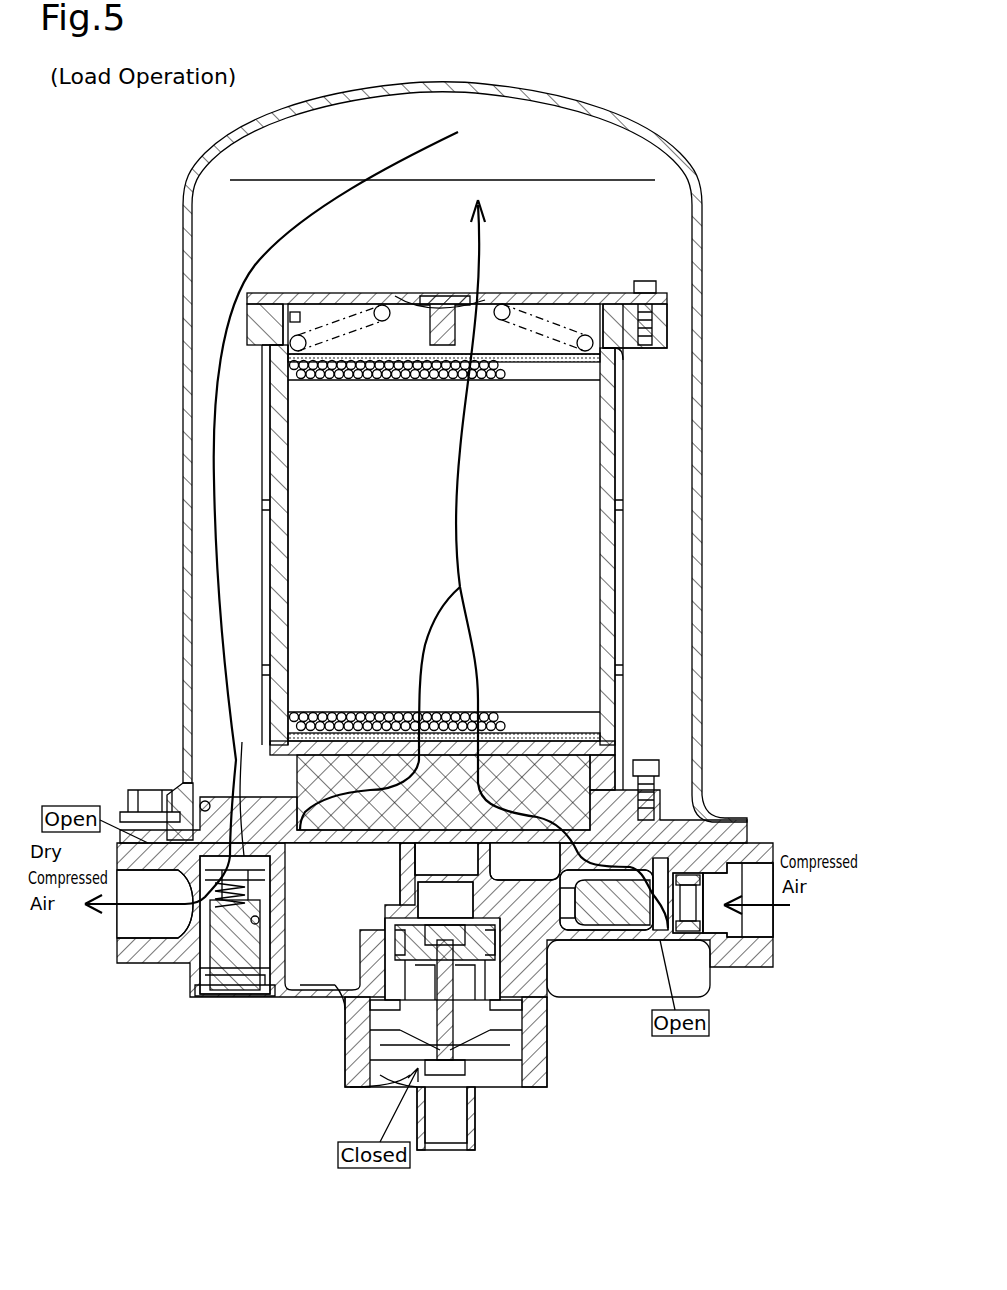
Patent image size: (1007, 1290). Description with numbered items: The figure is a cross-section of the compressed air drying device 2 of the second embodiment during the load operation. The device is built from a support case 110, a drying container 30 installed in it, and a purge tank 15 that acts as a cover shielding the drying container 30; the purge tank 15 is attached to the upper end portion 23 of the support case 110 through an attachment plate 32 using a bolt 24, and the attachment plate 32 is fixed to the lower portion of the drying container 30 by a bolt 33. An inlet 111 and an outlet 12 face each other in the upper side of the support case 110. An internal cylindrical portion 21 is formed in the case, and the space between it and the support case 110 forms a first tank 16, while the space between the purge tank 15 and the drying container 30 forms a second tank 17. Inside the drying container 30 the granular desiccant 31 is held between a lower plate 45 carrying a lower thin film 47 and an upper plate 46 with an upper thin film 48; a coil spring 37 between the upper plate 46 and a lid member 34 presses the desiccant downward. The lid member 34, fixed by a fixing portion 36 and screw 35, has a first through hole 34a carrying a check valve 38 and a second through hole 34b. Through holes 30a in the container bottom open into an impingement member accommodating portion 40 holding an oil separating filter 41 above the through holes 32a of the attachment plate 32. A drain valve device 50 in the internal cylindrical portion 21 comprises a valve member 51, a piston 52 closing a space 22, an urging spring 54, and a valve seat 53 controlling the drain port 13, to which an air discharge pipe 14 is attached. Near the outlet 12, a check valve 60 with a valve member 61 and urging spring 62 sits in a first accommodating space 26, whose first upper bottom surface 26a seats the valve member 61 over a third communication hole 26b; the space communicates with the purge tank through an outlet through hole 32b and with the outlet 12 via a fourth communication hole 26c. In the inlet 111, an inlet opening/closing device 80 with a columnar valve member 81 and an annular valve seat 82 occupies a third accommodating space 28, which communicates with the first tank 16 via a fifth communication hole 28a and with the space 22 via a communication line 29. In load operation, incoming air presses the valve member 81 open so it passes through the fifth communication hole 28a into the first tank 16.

The compressed air drying device 2 is at (693, 121).
The outlet 12 is at (117, 932).
The drain port 13 is at (375, 1090).
The air discharge pipe 14 is at (478, 1126).
The purge tank 15 is at (703, 232).
The first tank 16 is at (496, 874).
The second tank 17 is at (512, 168).
The internal cylindrical portion 21 is at (398, 878).
The space 22 is at (462, 915).
The upper end portion 23 is at (760, 840).
The bolt 24 is at (128, 798).
The first accommodating space 26 is at (262, 946).
The first upper bottom surface 26a is at (243, 800).
The third communication hole 26b is at (248, 852).
The fourth communication hole 26c is at (212, 972).
The third accommodating space 28 is at (610, 930).
The fifth communication hole 28a is at (668, 885).
The communication line 29 is at (478, 874).
The drying container 30 is at (626, 408).
The through holes 30a is at (398, 722).
The desiccant 31 is at (378, 380).
The attachment plate 32 is at (706, 806).
The through holes 32a is at (360, 843).
The outlet through hole 32b is at (200, 798).
The bolt 33 is at (648, 760).
The lid member 34 is at (580, 293).
The first through hole 34a is at (470, 293).
The second through hole 34b is at (358, 293).
The screw 35 is at (645, 281).
The fixing portion 36 is at (668, 322).
The coil spring 37 is at (535, 312).
The check valve 38 is at (415, 293).
The impingement member accommodating portion 40 is at (612, 762).
The oil separating filter 41 is at (268, 752).
The lower plate 45 is at (540, 718).
The upper plate 46 is at (510, 378).
The lower thin film 47 is at (578, 720).
The upper thin film 48 is at (563, 378).
The drain valve device 50 is at (366, 932).
The valve member 51 is at (356, 1048).
The piston 52 is at (386, 945).
The valve seat 53 is at (462, 1075).
The urging spring 54 is at (345, 990).
The check valve 60 is at (210, 996).
The valve member 61 is at (258, 894).
The urging spring 62 is at (260, 920).
The inlet opening/closing device 80 is at (652, 962).
The valve member 81 is at (600, 940).
The valve seat 82 is at (692, 932).
The support case 110 is at (722, 990).
The inlet 111 is at (776, 930).